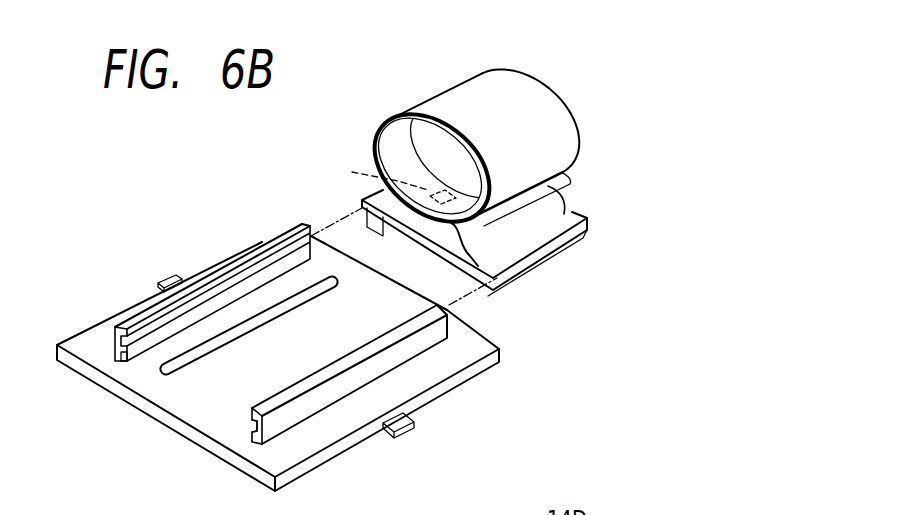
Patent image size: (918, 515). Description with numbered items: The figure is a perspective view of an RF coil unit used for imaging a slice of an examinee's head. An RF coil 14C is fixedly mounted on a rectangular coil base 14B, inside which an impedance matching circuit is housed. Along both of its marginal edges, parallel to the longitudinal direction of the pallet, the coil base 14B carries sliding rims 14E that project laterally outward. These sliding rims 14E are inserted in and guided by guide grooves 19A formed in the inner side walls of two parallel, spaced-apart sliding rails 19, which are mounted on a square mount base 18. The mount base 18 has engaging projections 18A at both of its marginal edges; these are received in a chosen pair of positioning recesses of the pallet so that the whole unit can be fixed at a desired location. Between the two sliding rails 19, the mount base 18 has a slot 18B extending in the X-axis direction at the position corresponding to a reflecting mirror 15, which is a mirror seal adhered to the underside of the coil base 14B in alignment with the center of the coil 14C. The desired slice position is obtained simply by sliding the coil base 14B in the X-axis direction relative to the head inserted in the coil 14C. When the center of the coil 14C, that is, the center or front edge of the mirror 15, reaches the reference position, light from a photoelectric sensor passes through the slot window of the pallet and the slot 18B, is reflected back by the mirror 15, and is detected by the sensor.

The coil base 14B is at (380, 222).
The RF coil 14C is at (580, 114).
The sliding rims 14E is at (357, 197).
The reflecting mirror 15 is at (358, 170).
The mount base 18 is at (483, 336).
The engaging projections 18A is at (166, 278).
The slot 18B is at (293, 298).
The sliding rails 19 is at (125, 360).
The guide grooves 19A is at (133, 352).